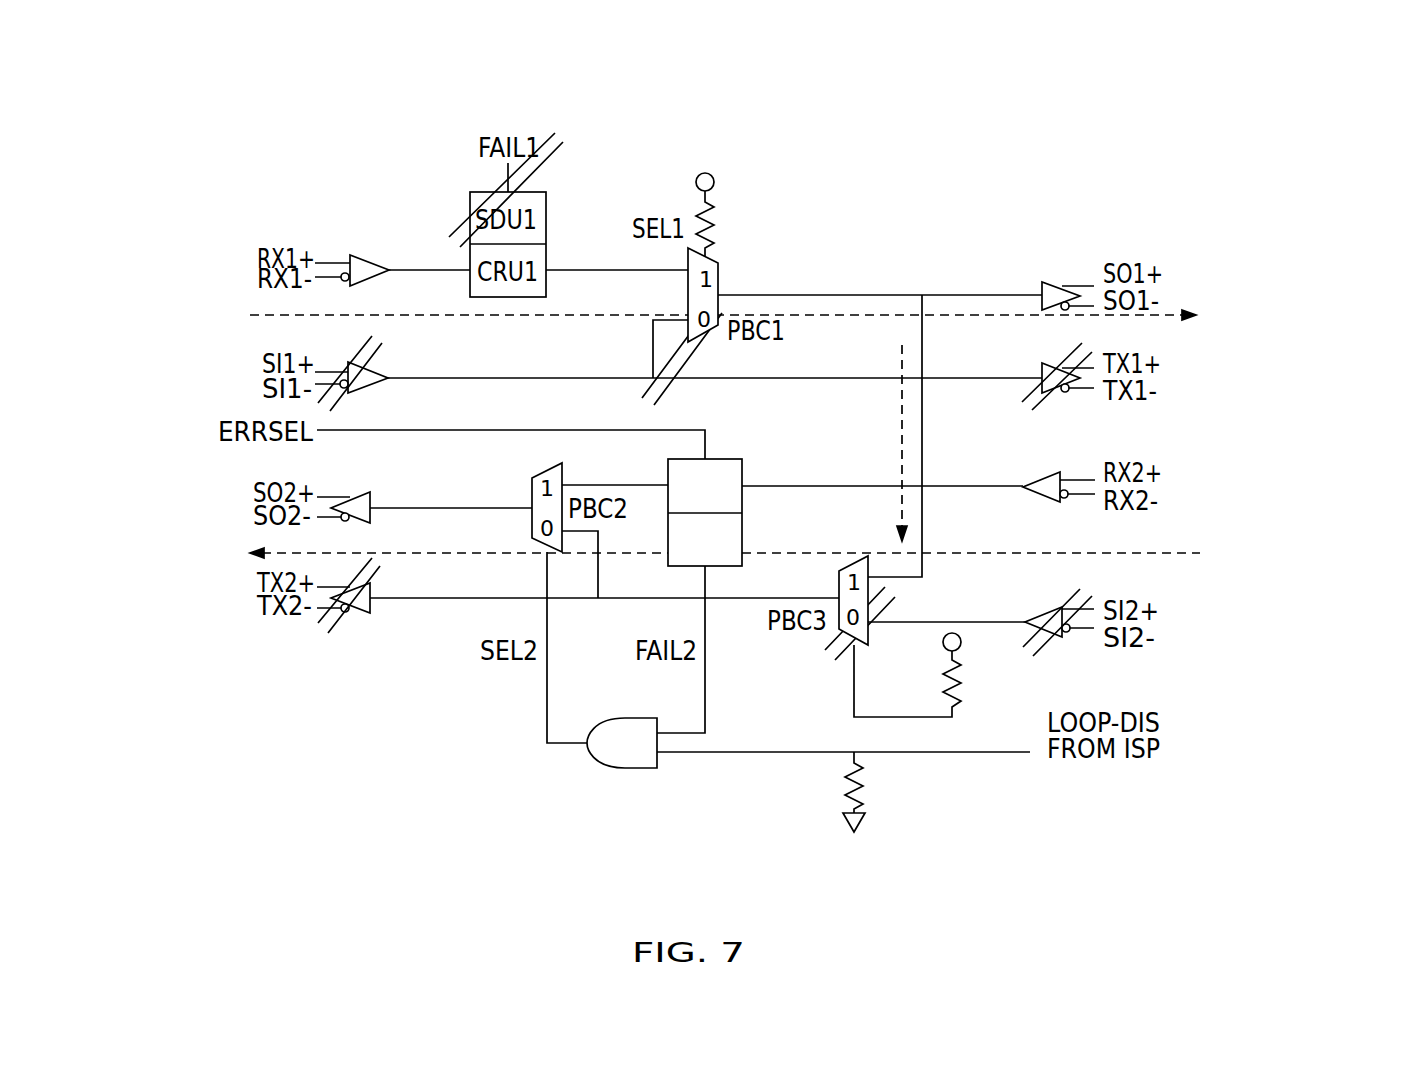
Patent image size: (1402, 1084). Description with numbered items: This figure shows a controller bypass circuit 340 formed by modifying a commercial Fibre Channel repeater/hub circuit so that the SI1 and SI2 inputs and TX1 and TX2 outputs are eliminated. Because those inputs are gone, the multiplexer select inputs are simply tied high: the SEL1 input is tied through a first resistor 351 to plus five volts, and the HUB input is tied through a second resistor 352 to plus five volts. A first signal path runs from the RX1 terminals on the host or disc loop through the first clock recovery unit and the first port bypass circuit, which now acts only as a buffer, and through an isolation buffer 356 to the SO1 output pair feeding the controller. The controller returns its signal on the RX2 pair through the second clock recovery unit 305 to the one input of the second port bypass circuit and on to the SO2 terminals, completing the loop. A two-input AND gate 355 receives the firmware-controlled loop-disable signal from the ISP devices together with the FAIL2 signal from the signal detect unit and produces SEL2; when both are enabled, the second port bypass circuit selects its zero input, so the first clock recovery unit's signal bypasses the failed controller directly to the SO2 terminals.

The controller bypass circuit 340 is at (1046, 150).
The resistor R1 351 is at (728, 216).
The resistor R2 352 is at (900, 677).
The CRU2 305 is at (742, 463).
The two-input AND gate 355 is at (607, 757).
The isolation buffer 356 is at (1043, 281).